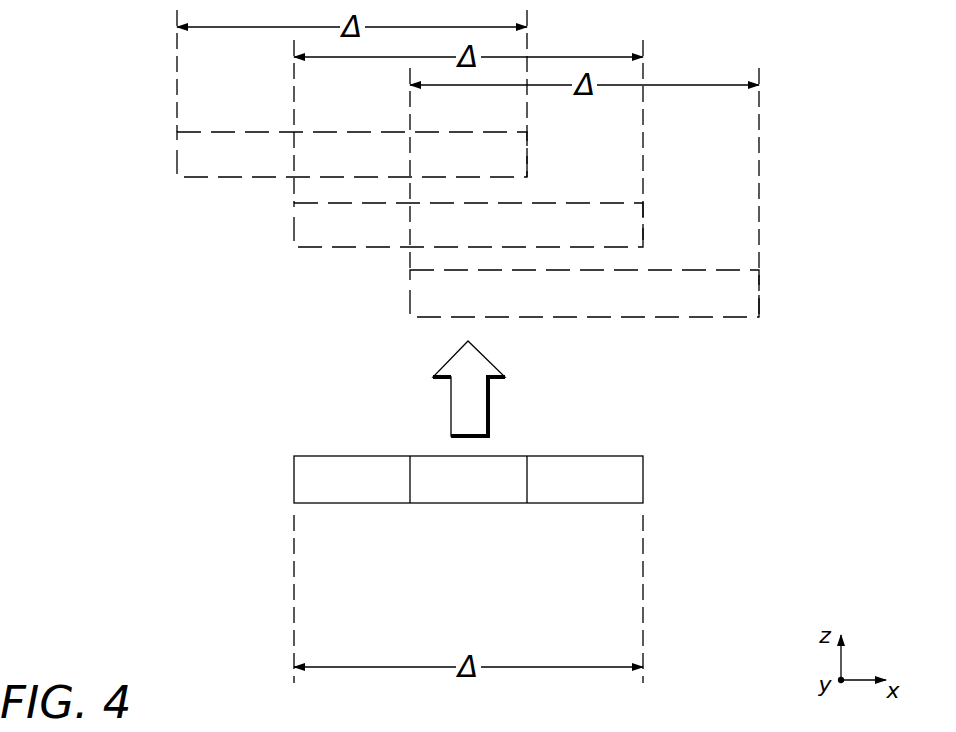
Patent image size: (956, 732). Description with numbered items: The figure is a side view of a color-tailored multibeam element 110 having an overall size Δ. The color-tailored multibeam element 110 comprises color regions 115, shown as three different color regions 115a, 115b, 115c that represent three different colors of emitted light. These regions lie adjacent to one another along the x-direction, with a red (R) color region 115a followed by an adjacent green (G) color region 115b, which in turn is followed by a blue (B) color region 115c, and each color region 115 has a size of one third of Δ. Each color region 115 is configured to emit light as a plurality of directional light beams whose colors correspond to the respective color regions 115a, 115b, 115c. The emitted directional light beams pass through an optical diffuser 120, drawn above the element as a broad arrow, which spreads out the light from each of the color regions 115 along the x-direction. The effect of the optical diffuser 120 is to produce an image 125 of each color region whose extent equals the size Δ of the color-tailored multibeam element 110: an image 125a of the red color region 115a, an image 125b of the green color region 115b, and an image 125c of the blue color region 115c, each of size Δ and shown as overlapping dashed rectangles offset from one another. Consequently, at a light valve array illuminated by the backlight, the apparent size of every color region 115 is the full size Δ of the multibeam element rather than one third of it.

The color-tailored multibeam element 110 is at (670, 428).
The color regions 115 is at (468, 541).
The red (R) color region 115a is at (352, 505).
The green (G) color region 115b is at (468, 505).
The blue (B) color region 115c is at (585, 505).
The optical diffuser 120 is at (451, 398).
The image 125 is at (462, 225).
The image of the red color region 125a is at (177, 151).
The image of the green color region 125b is at (294, 220).
The image of the blue color region 125c is at (410, 292).